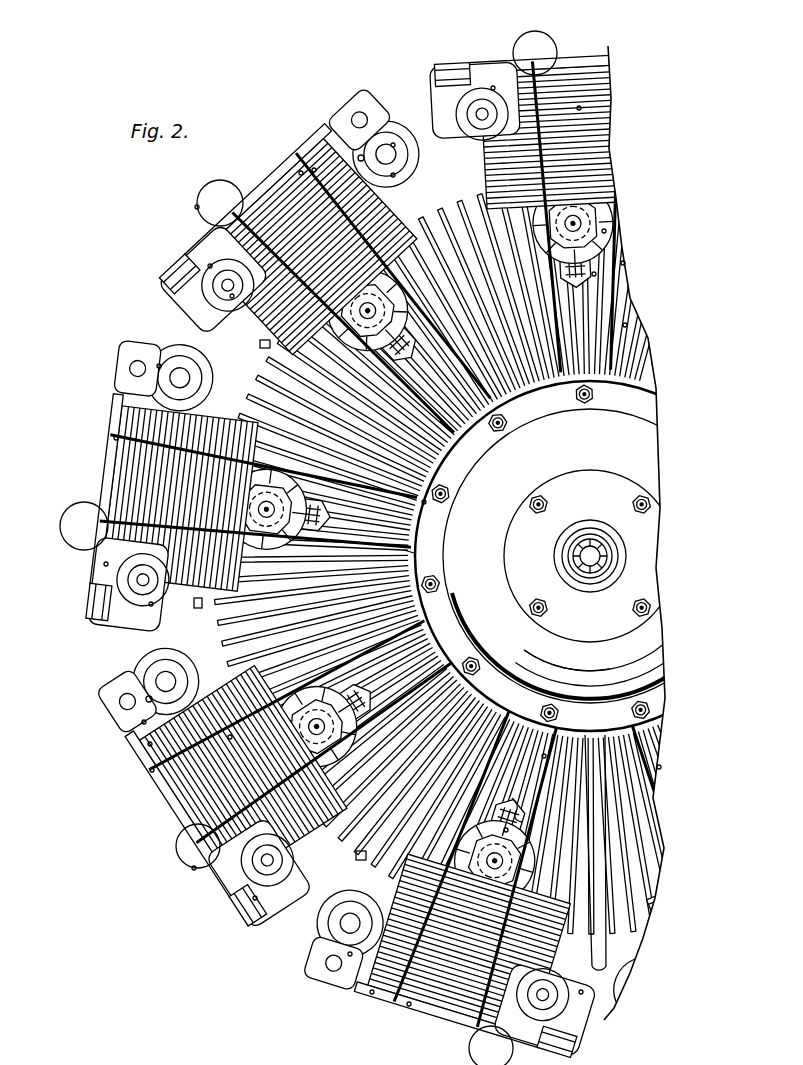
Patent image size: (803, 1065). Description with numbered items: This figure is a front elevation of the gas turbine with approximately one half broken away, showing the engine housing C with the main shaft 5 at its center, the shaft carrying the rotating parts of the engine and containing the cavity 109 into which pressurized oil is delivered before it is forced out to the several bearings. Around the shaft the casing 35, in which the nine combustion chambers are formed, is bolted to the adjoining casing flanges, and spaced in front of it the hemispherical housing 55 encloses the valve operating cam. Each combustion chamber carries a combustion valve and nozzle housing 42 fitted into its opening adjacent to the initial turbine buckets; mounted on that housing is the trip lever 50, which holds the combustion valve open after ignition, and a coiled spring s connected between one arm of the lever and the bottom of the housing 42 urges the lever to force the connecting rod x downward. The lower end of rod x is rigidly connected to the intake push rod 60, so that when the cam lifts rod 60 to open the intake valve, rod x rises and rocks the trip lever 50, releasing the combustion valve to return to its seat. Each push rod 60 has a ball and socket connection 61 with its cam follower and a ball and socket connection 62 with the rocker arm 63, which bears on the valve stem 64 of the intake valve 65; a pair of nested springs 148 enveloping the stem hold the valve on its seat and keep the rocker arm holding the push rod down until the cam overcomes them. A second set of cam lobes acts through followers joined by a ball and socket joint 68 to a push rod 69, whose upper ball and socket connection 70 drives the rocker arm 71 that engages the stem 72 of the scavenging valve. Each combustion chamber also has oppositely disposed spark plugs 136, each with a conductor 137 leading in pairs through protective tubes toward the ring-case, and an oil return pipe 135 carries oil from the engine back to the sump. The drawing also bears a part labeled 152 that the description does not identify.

The shaft 5 is at (627, 556).
The casing 35 is at (608, 150).
The combustion valve and nozzle housing 42 is at (598, 222).
The trip lever 50 is at (512, 806).
The hemispherical housing 55 is at (618, 658).
The push rod 60 is at (616, 254).
The ball and socket connection 61 is at (566, 558).
The ball and socket connection 62 is at (292, 163).
The rocker arm 63 is at (385, 135).
The valve stem 64 is at (385, 165).
The intake valve 65 is at (352, 148).
The ball and socket joint 68 is at (464, 494).
The push rod 69 is at (572, 98).
The ball and socket connection 70 is at (100, 520).
The rocker arm 71 is at (482, 77).
The stem 72 is at (218, 806).
The cavity 109 is at (636, 556).
The oil return pipe 135 is at (594, 872).
The spark plug 136 is at (254, 336).
The conductor 137 is at (350, 850).
The nested springs 148 is at (140, 690).
The valve port 152 is at (189, 200).
The engine housing C is at (650, 372).
The coiled spring s is at (588, 266).
The connecting rod x is at (618, 316).